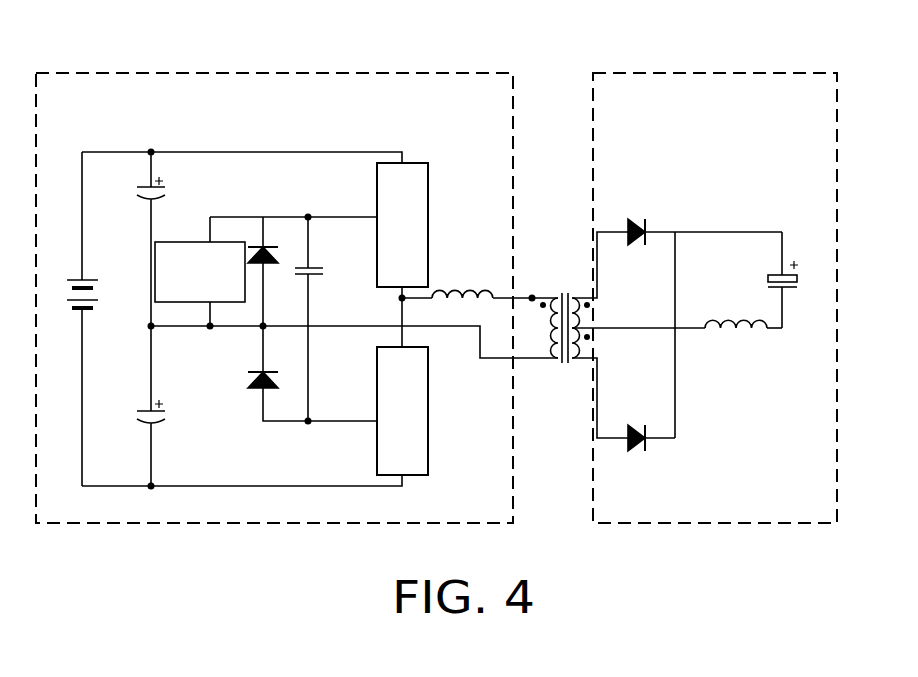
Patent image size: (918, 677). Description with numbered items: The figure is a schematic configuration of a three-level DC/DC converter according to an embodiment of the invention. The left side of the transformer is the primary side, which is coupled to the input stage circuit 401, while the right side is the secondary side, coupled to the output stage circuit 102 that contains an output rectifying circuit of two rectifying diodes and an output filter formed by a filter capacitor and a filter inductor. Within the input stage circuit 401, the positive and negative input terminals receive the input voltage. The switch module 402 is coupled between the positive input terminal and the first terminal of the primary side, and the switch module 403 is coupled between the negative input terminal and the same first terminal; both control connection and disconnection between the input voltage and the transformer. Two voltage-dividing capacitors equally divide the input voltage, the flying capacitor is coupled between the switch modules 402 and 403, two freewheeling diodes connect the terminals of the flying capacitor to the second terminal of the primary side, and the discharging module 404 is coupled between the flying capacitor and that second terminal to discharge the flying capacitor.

The input stage circuit 401 is at (266, 72).
The output stage circuit 102 is at (627, 72).
The discharging module 404 is at (190, 242).
The switch module 402 is at (430, 219).
The switch module 403 is at (430, 399).